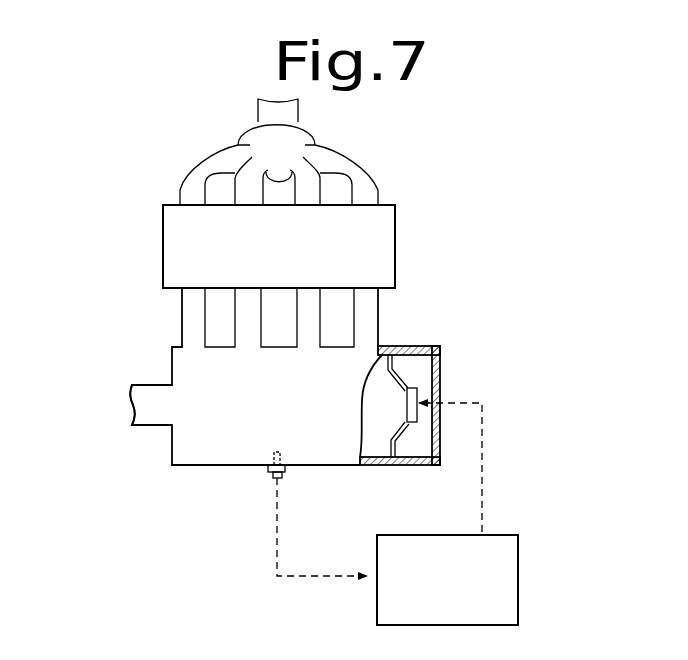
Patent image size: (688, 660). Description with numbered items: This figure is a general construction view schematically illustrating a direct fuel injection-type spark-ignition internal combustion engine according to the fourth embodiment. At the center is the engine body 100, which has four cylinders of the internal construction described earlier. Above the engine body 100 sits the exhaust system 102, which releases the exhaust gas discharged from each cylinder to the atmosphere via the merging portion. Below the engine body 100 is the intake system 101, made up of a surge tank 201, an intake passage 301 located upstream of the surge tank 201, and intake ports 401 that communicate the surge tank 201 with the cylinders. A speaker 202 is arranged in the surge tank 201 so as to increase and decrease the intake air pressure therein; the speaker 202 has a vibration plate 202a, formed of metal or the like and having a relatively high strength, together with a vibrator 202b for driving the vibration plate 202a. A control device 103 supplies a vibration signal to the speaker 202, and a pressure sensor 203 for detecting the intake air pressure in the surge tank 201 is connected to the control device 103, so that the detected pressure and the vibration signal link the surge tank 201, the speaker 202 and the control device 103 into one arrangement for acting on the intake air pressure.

The engine body 100 is at (370, 245).
The intake system 101 is at (417, 332).
The exhaust system 102 is at (390, 173).
The control device 103 is at (500, 582).
The surge tank 201 is at (222, 435).
The speaker 202 is at (413, 377).
The vibration plate 202a is at (405, 432).
The vibrator 202b is at (418, 397).
The pressure sensor 203 is at (280, 472).
The intake passage 301 is at (152, 410).
The intake ports 401 is at (247, 303).